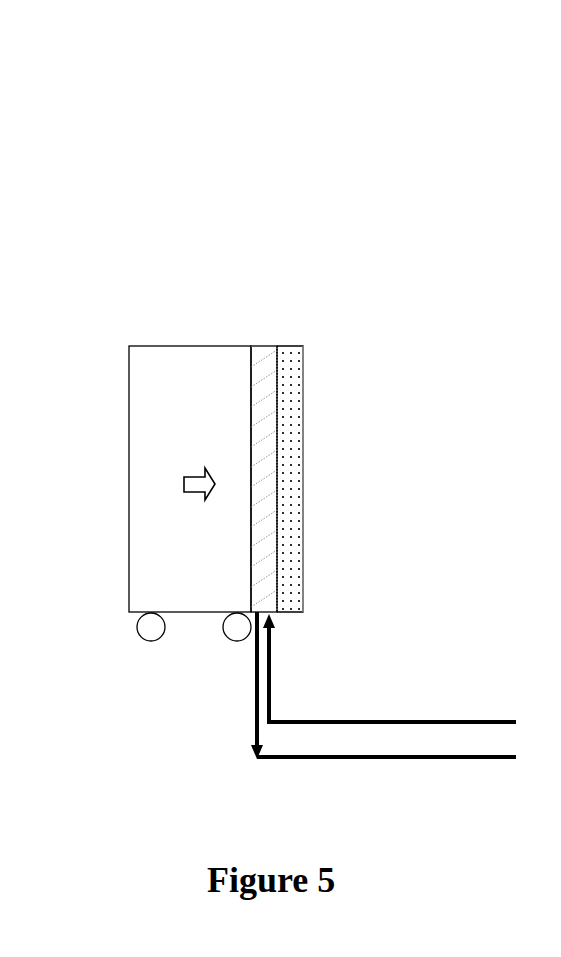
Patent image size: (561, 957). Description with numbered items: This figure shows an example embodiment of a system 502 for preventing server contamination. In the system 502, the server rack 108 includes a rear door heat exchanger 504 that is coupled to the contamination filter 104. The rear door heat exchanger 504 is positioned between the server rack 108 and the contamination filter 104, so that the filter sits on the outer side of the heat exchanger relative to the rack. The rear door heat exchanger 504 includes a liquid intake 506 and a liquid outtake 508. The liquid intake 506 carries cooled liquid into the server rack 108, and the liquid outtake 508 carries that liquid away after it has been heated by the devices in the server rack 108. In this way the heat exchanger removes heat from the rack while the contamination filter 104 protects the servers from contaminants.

The system 502 is at (270, 87).
The contamination filter 104 is at (298, 382).
The server rack 108 is at (128, 425).
The rear door heat exchanger 504 is at (265, 345).
The liquid intake 506 is at (271, 686).
The liquid outtake 508 is at (255, 705).